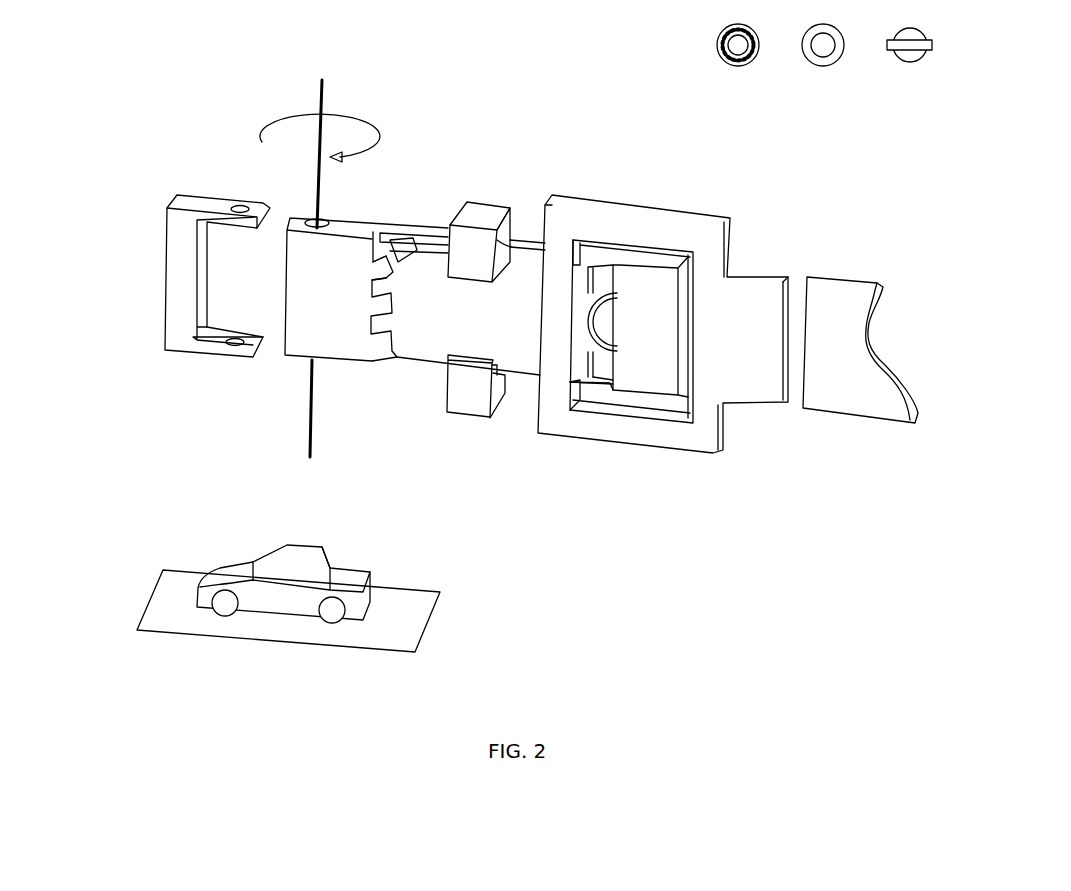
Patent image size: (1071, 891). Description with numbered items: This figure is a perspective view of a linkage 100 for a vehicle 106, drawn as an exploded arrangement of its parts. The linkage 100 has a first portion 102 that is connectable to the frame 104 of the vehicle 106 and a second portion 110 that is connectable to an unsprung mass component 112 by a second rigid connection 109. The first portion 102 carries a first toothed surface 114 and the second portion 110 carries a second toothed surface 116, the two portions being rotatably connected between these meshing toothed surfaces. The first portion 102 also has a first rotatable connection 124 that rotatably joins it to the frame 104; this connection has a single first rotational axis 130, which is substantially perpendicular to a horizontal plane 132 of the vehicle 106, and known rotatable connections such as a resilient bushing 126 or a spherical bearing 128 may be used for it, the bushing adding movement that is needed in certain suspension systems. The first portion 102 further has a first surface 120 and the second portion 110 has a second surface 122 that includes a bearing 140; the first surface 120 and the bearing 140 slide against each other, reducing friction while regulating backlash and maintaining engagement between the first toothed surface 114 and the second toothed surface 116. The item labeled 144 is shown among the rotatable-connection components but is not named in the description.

The linkage 100 is at (540, 140).
The first portion 102 is at (340, 337).
The frame 104 is at (185, 233).
The vehicle 106 is at (228, 575).
The second rigid connection 109 is at (782, 403).
The second portion 110 is at (723, 302).
The unsprung mass component 112 is at (863, 393).
The first toothed surface 114 is at (378, 254).
The second toothed surface 116 is at (392, 243).
The first surface 120 is at (615, 382).
The second surface 122 is at (607, 297).
The first rotatable connection 124 is at (300, 217).
The resilient bushing 126 is at (820, 65).
The spherical bearing 128 is at (907, 62).
The first rotational axis 130 is at (323, 93).
The horizontal plane 132 is at (163, 605).
The bearing 140 is at (615, 290).
The bearing 144 is at (727, 67).